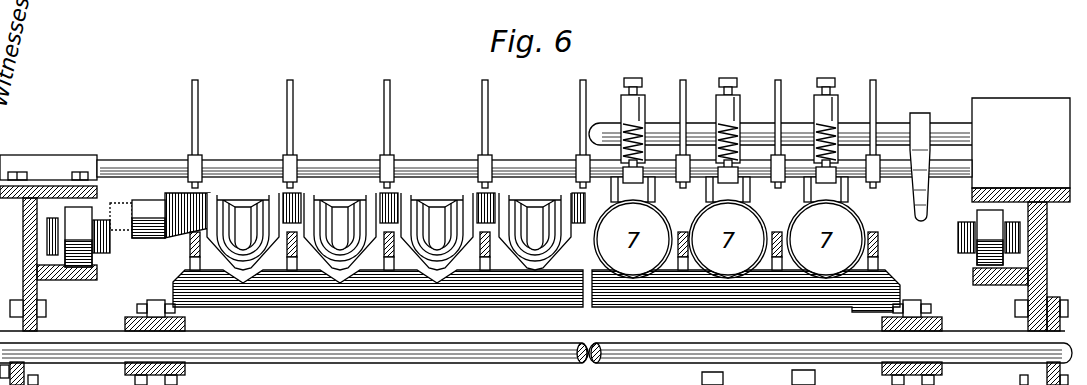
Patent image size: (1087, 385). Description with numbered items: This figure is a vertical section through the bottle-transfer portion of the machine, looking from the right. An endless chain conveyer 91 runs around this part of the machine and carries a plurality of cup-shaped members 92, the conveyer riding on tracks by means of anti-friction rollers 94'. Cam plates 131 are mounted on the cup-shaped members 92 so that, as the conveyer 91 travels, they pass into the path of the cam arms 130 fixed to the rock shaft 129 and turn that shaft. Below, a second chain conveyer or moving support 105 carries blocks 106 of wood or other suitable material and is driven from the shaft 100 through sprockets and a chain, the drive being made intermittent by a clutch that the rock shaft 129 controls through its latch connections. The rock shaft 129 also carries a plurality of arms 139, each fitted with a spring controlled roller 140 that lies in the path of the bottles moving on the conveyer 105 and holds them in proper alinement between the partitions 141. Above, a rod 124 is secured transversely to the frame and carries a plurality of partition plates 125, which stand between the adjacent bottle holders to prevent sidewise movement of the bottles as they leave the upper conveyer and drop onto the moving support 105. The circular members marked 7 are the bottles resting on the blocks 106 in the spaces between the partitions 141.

The roller 7 is at (729, 239).
The endless chain conveyer 91 is at (47, 240).
The cup-shaped members 92 is at (243, 263).
The anti-friction rollers 94' is at (534, 249).
The shaft 100 is at (285, 357).
The chain conveyer or moving support 105 is at (140, 305).
The blocks 106 is at (538, 302).
The rod 124 is at (151, 167).
The partition plates 125 is at (199, 104).
The rock shaft 129 is at (892, 130).
The cam arms 130 is at (914, 204).
The cam plates 131 is at (115, 205).
The arms 139 is at (622, 102).
The spring controlled roller 140 is at (658, 190).
The partitions 141 is at (190, 246).